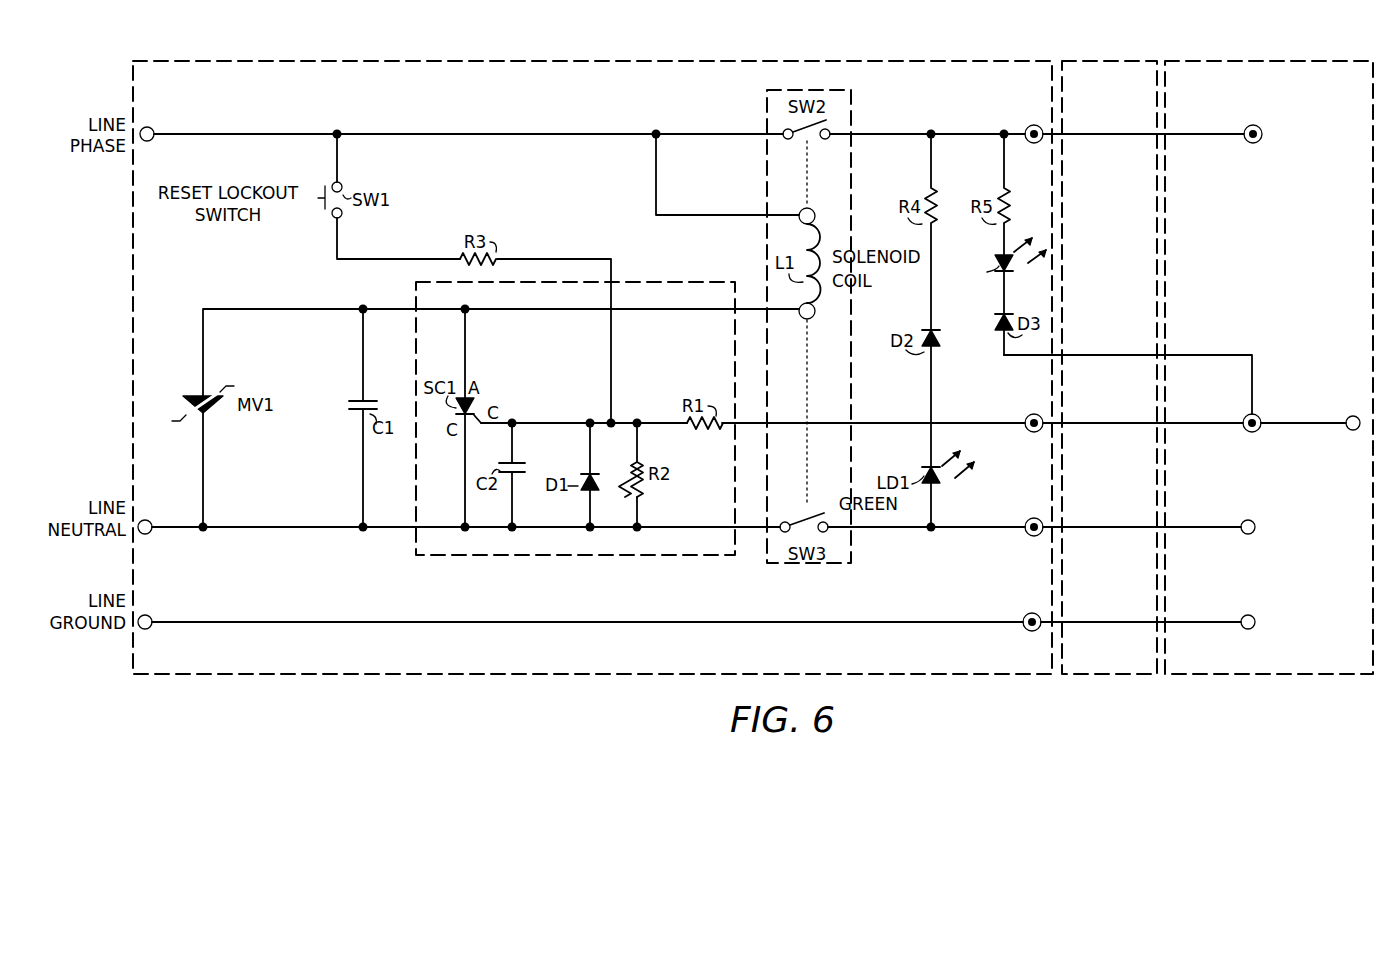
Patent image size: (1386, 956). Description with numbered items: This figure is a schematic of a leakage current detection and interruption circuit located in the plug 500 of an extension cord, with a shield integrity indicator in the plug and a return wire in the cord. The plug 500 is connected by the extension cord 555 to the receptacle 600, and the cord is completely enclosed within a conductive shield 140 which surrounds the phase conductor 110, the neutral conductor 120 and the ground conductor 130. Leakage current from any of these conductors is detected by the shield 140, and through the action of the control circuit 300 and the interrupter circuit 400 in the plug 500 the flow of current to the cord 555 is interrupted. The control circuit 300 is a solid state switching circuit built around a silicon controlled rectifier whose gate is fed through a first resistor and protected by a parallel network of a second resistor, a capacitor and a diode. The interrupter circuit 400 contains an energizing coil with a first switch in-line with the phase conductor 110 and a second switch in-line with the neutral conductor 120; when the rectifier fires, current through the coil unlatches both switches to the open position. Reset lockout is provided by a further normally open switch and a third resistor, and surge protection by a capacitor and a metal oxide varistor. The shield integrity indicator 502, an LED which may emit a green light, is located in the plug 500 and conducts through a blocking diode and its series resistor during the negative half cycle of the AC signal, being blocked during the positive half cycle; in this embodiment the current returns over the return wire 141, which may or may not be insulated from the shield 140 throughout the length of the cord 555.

The phase conductor 110 is at (228, 133).
The neutral conductor 120 is at (215, 530).
The ground conductor 130 is at (215, 624).
The conductive shield 140 is at (906, 423).
The return wire 141 is at (1224, 354).
The control circuit 300 is at (445, 556).
The interrupter circuit 400 is at (767, 106).
The plug 500 is at (800, 60).
The shield integrity indicator 502 is at (1024, 278).
The extension cord 555 is at (1122, 675).
The receptacle 600 is at (1285, 675).